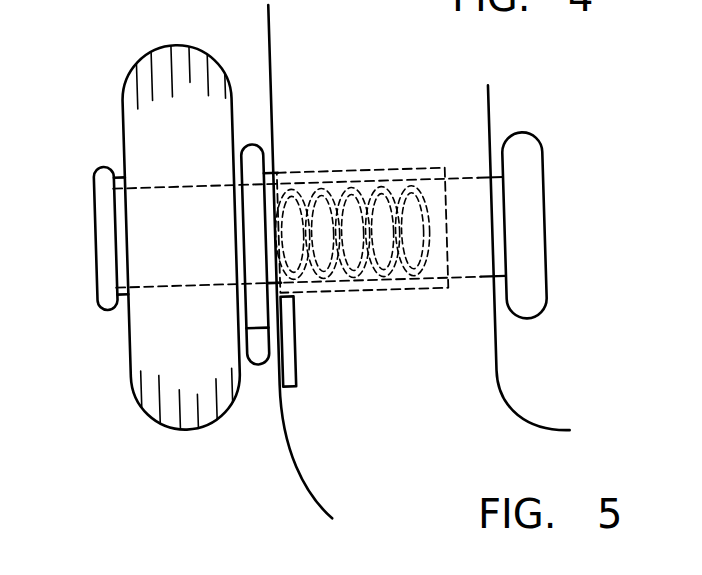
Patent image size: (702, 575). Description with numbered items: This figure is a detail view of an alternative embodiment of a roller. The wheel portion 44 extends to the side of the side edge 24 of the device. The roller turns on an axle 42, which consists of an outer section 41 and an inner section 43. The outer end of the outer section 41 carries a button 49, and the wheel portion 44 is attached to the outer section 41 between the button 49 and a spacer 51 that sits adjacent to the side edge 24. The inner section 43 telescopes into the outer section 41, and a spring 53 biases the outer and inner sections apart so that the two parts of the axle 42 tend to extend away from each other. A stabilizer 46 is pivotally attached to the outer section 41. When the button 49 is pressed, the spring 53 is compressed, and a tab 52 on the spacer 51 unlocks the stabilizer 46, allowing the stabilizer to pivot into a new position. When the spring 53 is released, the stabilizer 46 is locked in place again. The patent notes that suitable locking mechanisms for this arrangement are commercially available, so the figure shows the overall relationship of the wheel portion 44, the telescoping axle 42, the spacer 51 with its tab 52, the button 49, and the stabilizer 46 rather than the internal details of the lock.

The wheel portion 44 is at (202, 56).
The outer section 41 is at (103, 165).
The button 49 is at (104, 306).
The spacer 51 is at (246, 224).
The tab 52 is at (251, 347).
The side edge 24 is at (277, 155).
The inner section 43 is at (468, 193).
The stabilizer 46 is at (394, 408).
The spring 53 is at (394, 284).
The axle 42 is at (543, 290).